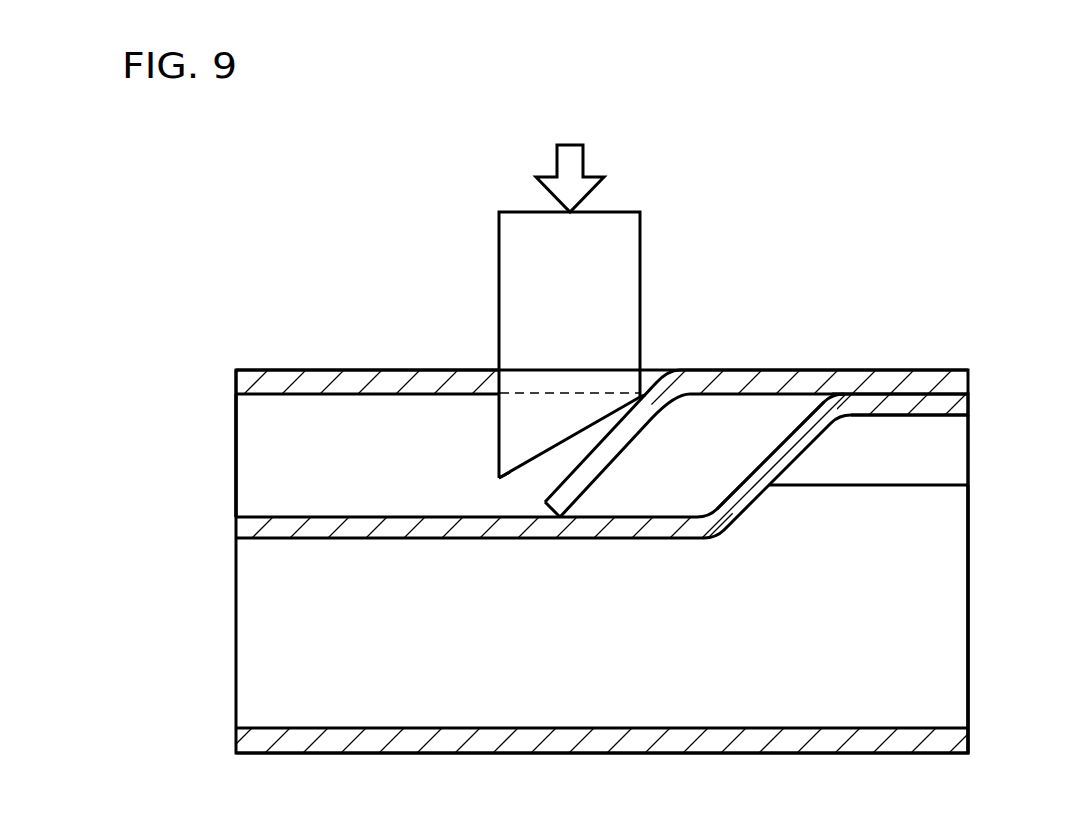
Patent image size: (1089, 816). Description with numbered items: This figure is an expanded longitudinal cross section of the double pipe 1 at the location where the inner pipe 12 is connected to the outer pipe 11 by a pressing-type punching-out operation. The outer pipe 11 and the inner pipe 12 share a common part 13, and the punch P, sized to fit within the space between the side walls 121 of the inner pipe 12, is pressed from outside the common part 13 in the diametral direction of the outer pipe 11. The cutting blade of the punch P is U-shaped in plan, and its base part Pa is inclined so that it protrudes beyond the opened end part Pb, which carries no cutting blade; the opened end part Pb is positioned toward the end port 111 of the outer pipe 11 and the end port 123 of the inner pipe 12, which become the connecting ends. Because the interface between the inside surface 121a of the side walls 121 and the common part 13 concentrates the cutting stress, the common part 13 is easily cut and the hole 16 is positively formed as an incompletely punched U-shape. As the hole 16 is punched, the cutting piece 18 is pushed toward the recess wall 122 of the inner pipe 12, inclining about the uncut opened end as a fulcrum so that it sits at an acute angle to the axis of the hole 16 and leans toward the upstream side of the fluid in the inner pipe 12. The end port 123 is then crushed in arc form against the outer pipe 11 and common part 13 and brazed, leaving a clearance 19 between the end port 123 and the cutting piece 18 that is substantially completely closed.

The honeycomb panel assembly 1 is at (242, 353).
The outer pipe 11 is at (236, 667).
The end port of the outer pipe 111 is at (970, 552).
The inner pipe 12 is at (220, 468).
The side walls of the inner pipe 121 is at (236, 420).
The inside surface of the side walls 121a is at (298, 405).
The recess wall of the inner pipe 122 is at (400, 540).
The end port of the inner pipe 123 is at (970, 400).
The common part 13 is at (378, 370).
The hole 16 is at (571, 368).
The cutting piece 18 is at (603, 480).
The clearance 19 is at (717, 480).
The punch P is at (643, 257).
The base part of the U-shape Pa is at (497, 480).
The opened end part of the U-shape Pb is at (640, 405).